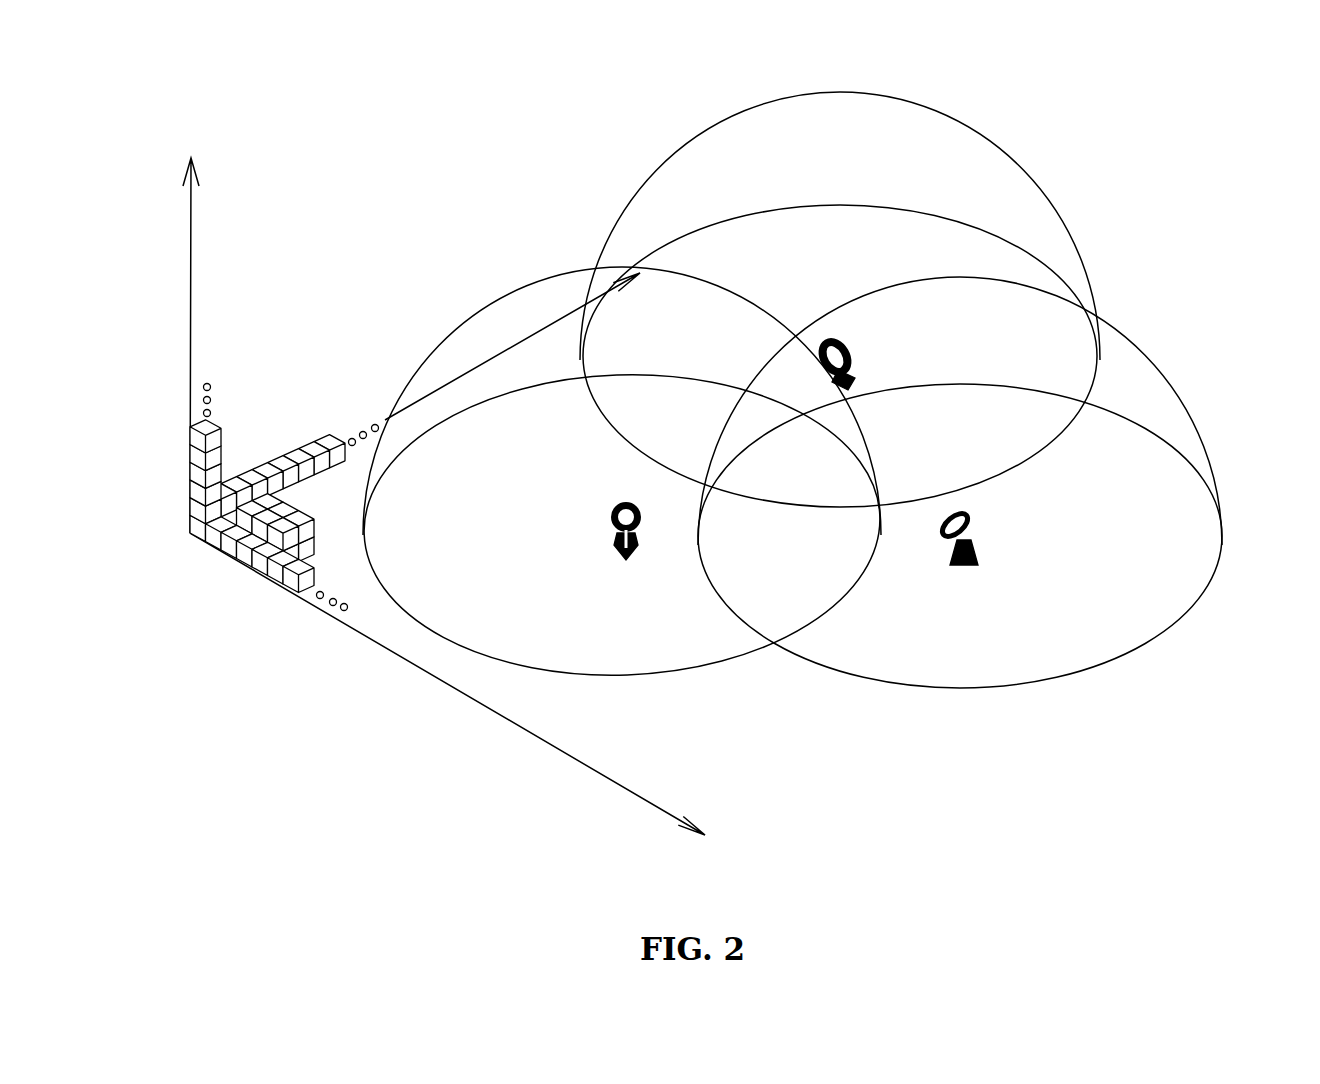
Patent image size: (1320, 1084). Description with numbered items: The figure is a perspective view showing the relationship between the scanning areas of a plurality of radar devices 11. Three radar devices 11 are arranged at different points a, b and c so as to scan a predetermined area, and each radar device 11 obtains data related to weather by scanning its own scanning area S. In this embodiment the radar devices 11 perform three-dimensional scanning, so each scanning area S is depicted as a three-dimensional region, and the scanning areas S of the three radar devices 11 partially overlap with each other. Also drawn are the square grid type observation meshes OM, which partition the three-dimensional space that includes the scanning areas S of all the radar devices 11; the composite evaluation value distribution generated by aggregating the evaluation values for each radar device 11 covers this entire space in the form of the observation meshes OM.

The radar device 11 is at (801, 459).
The scanning area S is at (530, 288).
The observation meshes OM is at (260, 583).
The point a is at (637, 546).
The point b is at (960, 557).
The point c is at (841, 352).